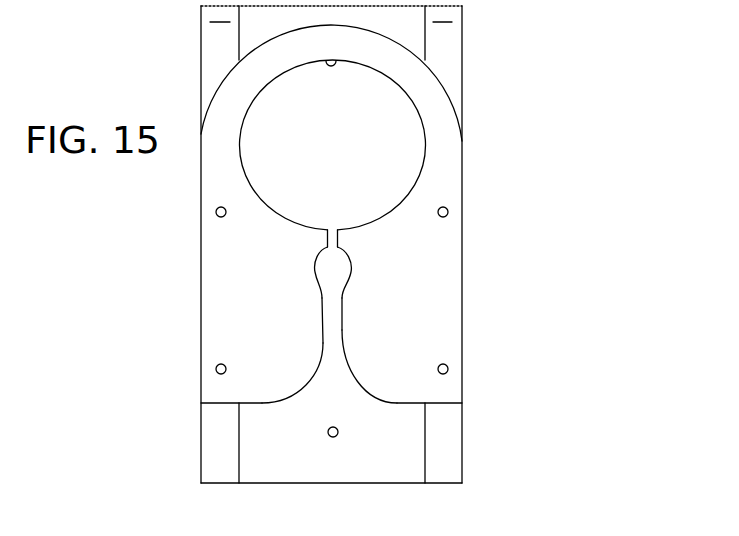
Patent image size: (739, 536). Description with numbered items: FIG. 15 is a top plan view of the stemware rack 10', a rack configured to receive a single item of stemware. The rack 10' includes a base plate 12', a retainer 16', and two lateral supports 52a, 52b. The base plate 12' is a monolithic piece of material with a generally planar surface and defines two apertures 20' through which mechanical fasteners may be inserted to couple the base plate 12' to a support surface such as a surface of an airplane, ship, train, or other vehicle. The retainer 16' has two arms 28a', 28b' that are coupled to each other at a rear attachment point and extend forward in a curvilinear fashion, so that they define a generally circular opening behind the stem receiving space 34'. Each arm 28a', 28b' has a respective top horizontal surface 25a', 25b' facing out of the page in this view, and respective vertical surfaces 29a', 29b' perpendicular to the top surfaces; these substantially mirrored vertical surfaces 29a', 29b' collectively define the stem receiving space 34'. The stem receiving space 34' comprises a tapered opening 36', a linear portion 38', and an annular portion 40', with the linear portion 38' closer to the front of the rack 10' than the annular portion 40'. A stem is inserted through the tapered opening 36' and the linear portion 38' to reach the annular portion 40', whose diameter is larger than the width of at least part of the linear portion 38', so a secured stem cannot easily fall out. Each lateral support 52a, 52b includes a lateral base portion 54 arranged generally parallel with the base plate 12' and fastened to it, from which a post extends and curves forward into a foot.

The stemware rack 10' is at (418, 244).
The base plate 12' is at (332, 145).
The retainer 16' is at (302, 84).
The apertures 20' is at (305, 455).
The top horizontal surface 25a' is at (256, 352).
The top horizontal surface 25b' is at (415, 352).
The arm 28a' is at (161, 244).
The arm 28b' is at (507, 244).
The vertical surface 29a' is at (372, 271).
The vertical surface 29b' is at (378, 388).
The stem receiving space 34' is at (382, 309).
The tapered opening 36' is at (293, 390).
The linear portion 38' is at (286, 314).
The annular portion 40' is at (285, 253).
The lateral support 52a is at (209, 465).
The lateral support 52b is at (455, 465).
The lateral base portion 54 is at (209, 435).